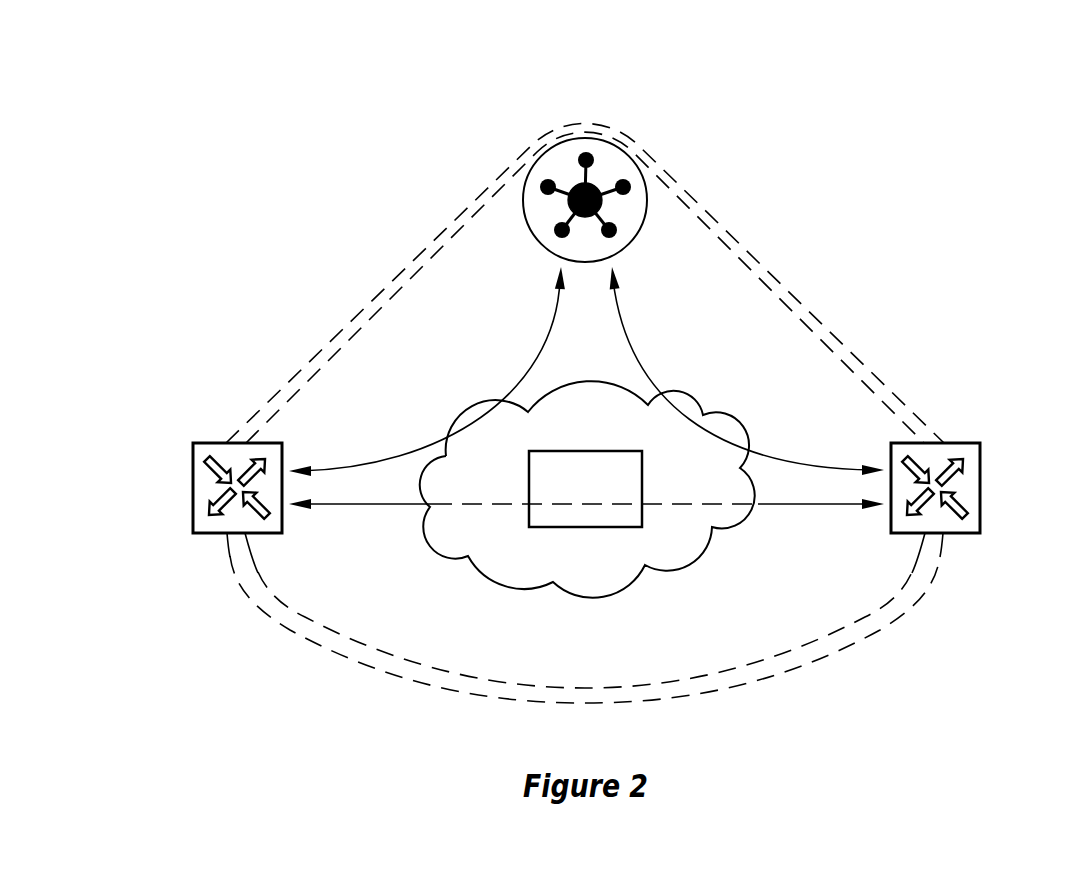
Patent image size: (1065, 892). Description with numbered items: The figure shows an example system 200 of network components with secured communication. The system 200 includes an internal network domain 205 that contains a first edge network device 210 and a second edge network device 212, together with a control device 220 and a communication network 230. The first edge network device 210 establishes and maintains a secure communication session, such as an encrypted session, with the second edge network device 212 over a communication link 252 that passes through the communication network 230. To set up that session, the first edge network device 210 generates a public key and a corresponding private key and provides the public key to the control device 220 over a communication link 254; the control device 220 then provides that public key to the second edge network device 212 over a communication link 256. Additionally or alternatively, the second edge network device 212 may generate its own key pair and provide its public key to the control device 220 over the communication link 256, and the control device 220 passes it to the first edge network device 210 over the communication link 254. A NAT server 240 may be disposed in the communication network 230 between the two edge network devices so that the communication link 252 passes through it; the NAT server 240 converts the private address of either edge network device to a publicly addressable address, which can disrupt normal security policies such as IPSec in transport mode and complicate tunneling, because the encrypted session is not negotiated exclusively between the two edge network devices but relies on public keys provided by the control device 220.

The system 200 is at (985, 98).
The internal network domain 205 is at (708, 692).
The first edge network device 210 is at (193, 486).
The second edge network device 212 is at (980, 488).
The control device 220 is at (648, 193).
The communication network 230 is at (568, 441).
The NAT server 240 is at (568, 491).
The communication link 252 is at (347, 506).
The communication link 254 is at (544, 326).
The communication link 256 is at (617, 333).